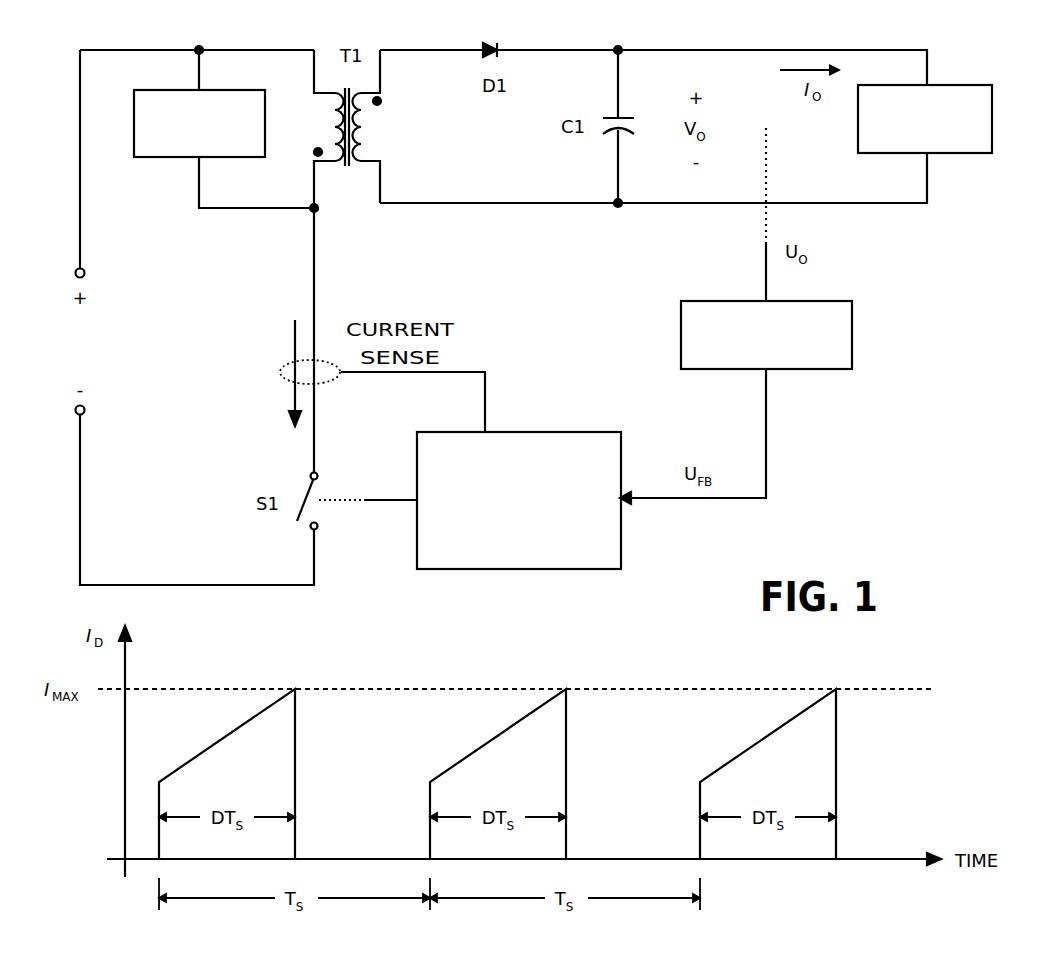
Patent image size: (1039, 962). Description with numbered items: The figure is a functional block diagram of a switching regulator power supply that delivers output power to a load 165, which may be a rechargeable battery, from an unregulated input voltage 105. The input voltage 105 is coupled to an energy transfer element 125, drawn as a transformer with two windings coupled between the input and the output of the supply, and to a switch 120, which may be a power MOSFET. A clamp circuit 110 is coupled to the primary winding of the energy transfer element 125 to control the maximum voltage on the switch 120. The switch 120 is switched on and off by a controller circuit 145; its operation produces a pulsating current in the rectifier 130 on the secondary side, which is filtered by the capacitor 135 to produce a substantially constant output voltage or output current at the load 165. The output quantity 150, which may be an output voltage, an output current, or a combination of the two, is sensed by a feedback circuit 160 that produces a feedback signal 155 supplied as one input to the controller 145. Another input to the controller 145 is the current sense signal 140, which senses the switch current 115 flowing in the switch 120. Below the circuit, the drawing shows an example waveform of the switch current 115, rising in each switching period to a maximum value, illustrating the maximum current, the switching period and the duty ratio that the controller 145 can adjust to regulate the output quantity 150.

The input voltage V_IN 105 is at (62, 368).
The clamp circuit 110 is at (175, 164).
The current I_D 115 is at (280, 320).
The switch S1 120 is at (295, 480).
The energy transfer element T1 125 is at (352, 187).
The rectifier D1 130 is at (478, 62).
The capacitor C1 135 is at (608, 108).
The current sense signal 140 is at (480, 362).
The controller circuit 145 is at (603, 425).
The output quantity U_O 150 is at (758, 268).
The feedback signal U_FB 155 is at (773, 452).
The feedback circuit 160 is at (860, 338).
The load 165 is at (948, 73).